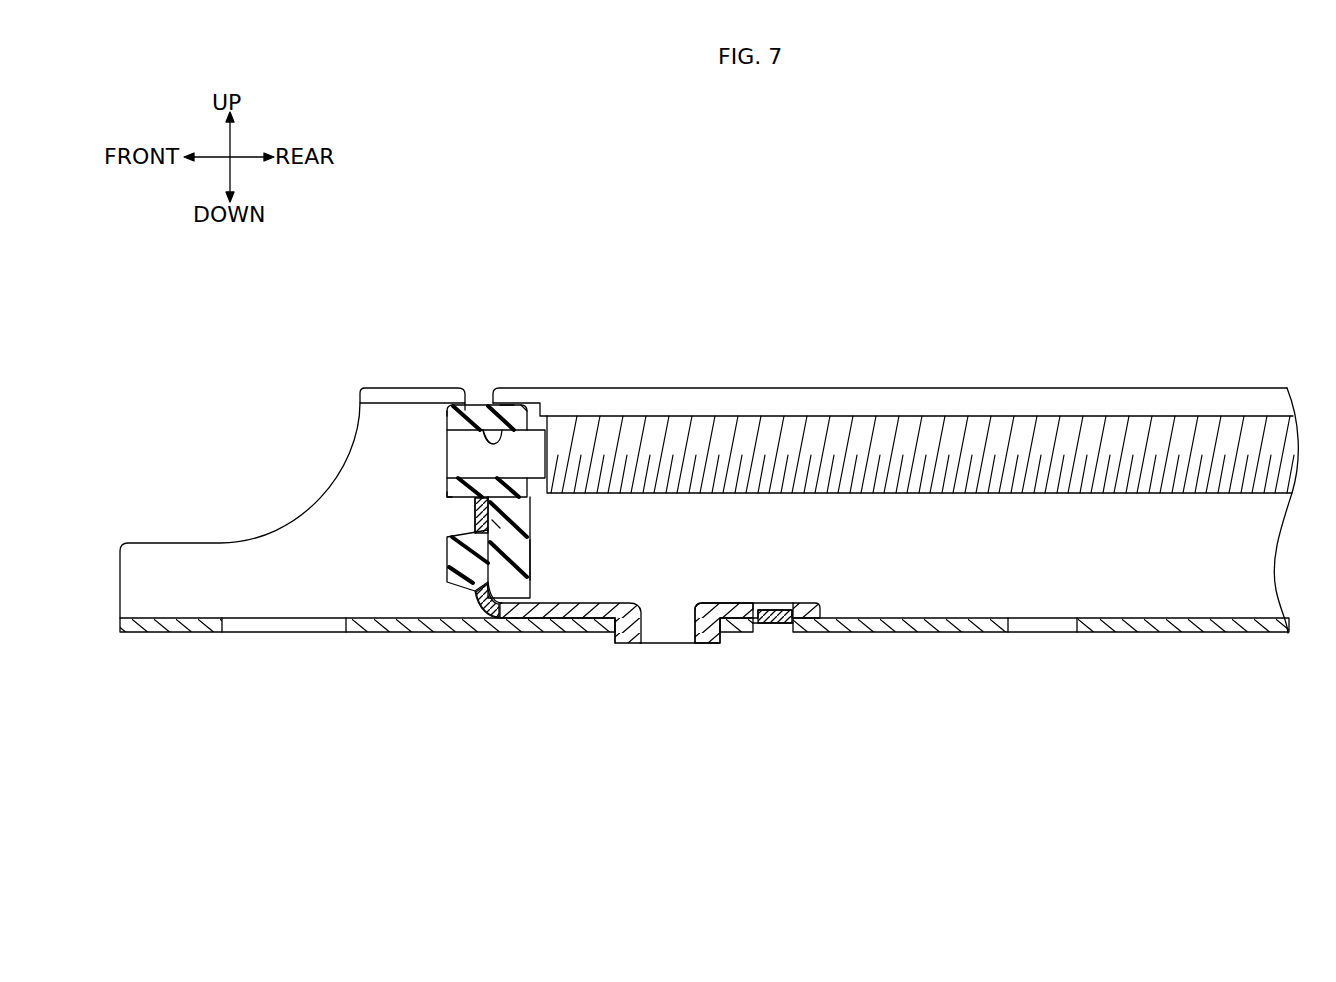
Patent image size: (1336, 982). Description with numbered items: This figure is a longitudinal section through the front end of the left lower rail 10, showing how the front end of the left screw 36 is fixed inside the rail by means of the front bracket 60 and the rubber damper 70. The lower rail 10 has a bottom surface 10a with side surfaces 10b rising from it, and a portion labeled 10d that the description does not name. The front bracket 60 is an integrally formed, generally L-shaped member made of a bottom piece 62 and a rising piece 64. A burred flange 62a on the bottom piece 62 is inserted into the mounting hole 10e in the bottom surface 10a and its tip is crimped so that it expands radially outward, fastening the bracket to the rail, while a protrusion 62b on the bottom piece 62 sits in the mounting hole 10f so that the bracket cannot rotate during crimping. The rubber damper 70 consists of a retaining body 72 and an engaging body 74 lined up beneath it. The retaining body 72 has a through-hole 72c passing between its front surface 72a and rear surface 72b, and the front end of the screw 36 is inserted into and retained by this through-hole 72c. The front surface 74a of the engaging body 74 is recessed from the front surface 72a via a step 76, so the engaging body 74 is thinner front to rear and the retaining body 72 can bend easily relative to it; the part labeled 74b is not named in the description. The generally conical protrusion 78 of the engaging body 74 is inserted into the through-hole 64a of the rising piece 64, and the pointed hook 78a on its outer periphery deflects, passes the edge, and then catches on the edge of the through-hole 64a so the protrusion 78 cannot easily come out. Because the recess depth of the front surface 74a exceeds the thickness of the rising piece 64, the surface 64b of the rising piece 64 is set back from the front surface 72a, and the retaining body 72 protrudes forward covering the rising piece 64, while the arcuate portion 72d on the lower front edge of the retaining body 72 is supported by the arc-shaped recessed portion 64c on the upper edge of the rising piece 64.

The lower rail 10 is at (858, 366).
The bottom surface 10a is at (973, 627).
The side surfaces 10b is at (900, 595).
The front wall portion 10d is at (287, 627).
The mounting hole 10e is at (697, 641).
The mounting hole 10f is at (785, 625).
The screw 36 is at (1027, 430).
The front bracket 60 is at (686, 517).
The bottom piece 62 is at (593, 603).
The flange 62a is at (638, 628).
The protrusion 62b is at (768, 624).
The rising piece 64 is at (492, 500).
The through-hole 64a is at (475, 516).
The surface 64b is at (470, 507).
The recessed portion 64c is at (483, 430).
The rubber damper 70 is at (258, 405).
The retaining body 72 is at (436, 425).
The front surface 72a is at (444, 414).
The rear surface 72b is at (526, 413).
The through-hole 72c is at (507, 408).
The arcuate portion 72d is at (492, 437).
The engaging body 74 is at (430, 494).
The front surface 74a is at (510, 512).
The lower support side portion 74b is at (530, 560).
The step 76 is at (492, 500).
The protrusion 78 is at (446, 552).
The hook 78a is at (464, 589).